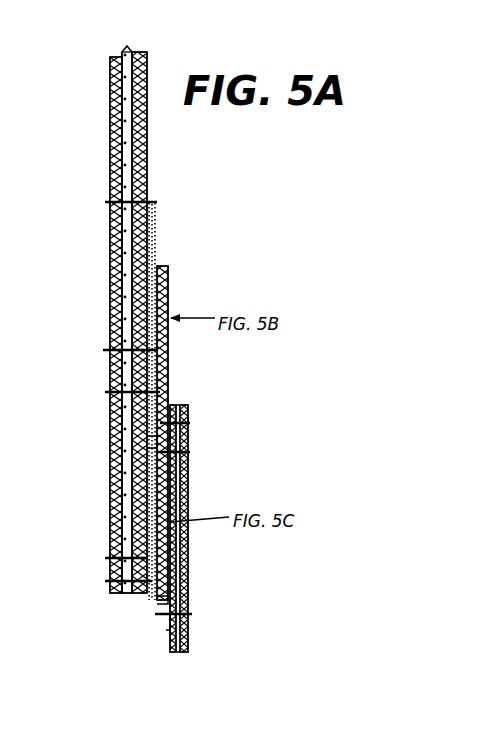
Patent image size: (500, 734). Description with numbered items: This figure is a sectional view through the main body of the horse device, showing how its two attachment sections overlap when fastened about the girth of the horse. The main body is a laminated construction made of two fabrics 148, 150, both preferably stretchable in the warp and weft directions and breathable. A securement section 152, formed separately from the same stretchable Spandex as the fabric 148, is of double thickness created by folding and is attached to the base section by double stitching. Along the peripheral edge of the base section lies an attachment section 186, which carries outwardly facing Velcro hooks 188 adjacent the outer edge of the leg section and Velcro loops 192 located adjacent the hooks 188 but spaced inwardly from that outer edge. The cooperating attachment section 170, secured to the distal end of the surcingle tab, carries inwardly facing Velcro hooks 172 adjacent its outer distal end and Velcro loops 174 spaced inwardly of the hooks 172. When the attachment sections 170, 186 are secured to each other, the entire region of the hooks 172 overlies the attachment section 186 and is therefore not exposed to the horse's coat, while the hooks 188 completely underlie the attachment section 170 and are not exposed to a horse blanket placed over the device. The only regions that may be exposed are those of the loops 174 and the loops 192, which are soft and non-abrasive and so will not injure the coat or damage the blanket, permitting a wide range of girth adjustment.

The fabric 148 is at (110, 102).
The fabric 150 is at (124, 149).
The securement section 152 is at (149, 140).
The attachment section 186 is at (149, 196).
The Velcro loops 192 is at (153, 226).
The Velcro hooks 172 is at (155, 372).
The Velcro hooks 188 is at (157, 442).
The Velcro loops 174 is at (160, 603).
The attachment section 170 is at (156, 625).